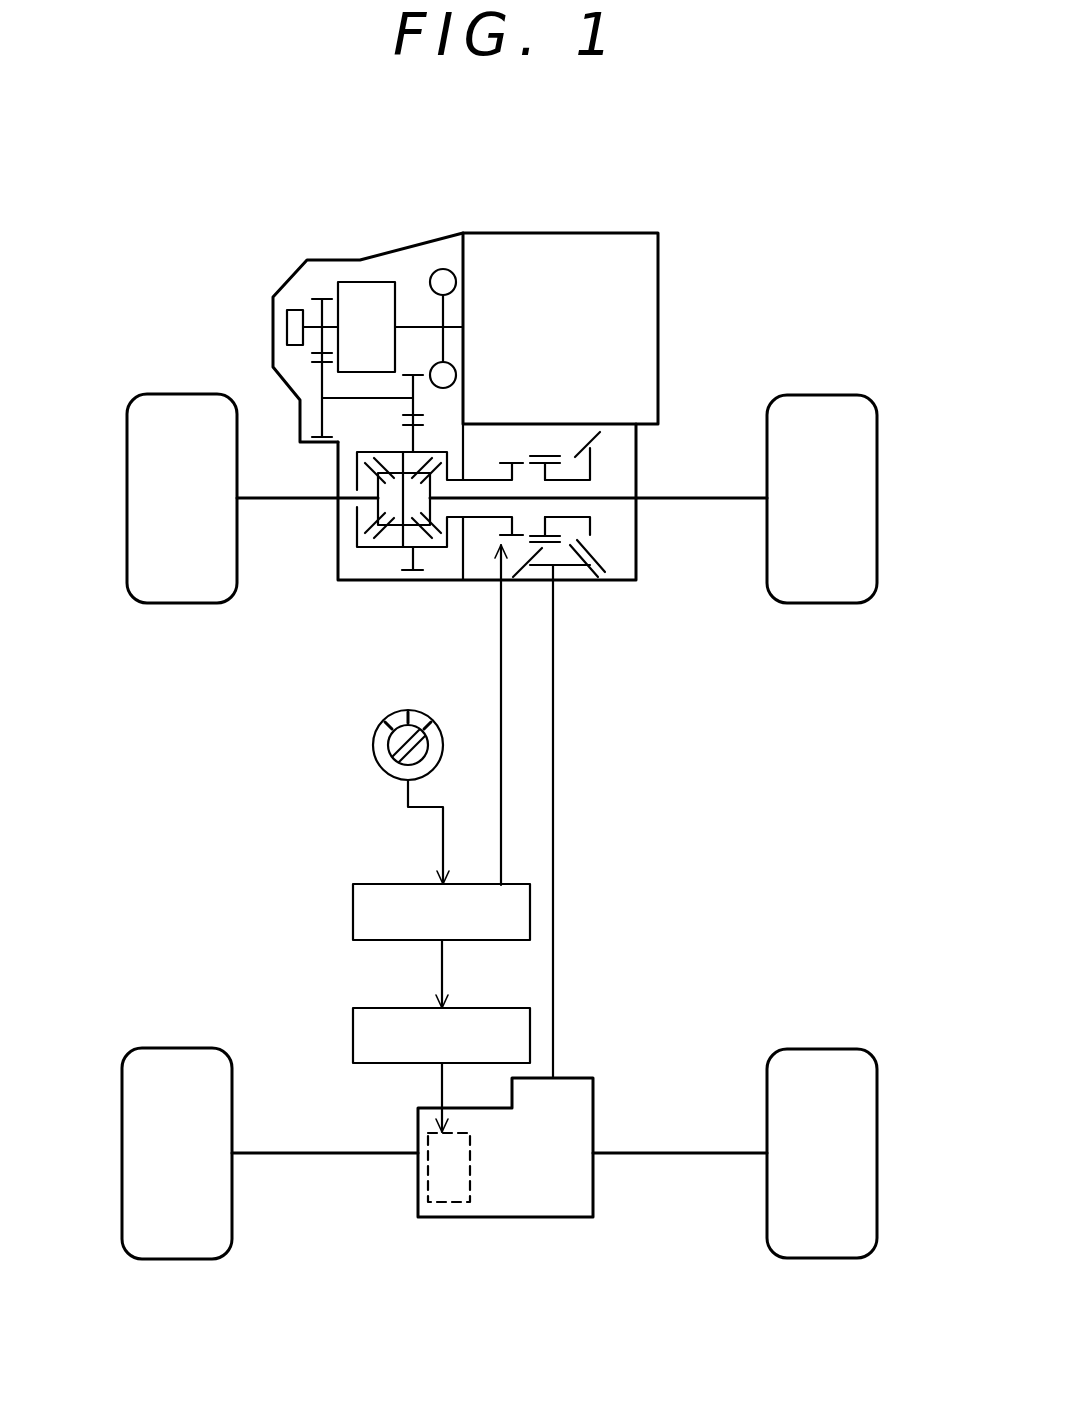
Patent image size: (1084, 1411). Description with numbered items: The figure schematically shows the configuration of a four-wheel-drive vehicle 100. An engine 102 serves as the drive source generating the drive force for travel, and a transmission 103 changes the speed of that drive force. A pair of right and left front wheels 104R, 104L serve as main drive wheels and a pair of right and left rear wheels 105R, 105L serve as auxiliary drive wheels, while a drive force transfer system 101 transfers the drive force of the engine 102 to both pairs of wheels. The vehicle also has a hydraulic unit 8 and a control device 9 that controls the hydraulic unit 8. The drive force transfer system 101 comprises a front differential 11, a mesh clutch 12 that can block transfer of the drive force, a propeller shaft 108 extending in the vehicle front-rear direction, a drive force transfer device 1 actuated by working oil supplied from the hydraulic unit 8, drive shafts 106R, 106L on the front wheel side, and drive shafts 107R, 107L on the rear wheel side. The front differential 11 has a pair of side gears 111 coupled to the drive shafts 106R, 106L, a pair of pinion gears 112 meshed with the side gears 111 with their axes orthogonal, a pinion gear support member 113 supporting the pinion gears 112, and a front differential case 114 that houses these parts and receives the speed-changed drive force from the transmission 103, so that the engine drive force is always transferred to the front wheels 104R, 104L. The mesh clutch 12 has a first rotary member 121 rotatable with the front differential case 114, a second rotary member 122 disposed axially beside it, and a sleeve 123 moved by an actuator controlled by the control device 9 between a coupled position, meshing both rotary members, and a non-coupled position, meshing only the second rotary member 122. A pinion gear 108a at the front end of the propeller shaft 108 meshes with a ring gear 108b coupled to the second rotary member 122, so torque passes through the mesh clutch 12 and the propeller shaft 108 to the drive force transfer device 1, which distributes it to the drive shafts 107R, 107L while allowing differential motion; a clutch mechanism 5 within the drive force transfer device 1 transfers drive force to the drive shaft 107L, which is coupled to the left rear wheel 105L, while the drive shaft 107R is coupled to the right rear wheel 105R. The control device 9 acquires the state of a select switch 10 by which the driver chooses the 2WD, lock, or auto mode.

The four-wheel-drive vehicle 100 is at (745, 203).
The drive force transfer system 101 is at (703, 375).
The engine 102 is at (532, 233).
The transmission 103 is at (348, 273).
The front differential 11 is at (440, 498).
The side gears 111 is at (382, 506).
The pinion gears 112 is at (408, 472).
The pinion gear support member 113 is at (400, 502).
The front differential case 114 is at (365, 550).
The mesh clutch 12 is at (594, 436).
The first rotary member 121 is at (512, 462).
The second rotary member 122 is at (577, 477).
The sleeve 123 is at (542, 457).
The propeller shaft 108 is at (555, 777).
The pinion gear 108a is at (590, 578).
The ring gear 108b is at (590, 536).
The select switch 10 is at (377, 765).
The control device 9 is at (393, 883).
The hydraulic unit 8 is at (352, 1023).
The drive force transfer device 1 is at (546, 1148).
The clutch mechanism 5 is at (443, 1203).
The left front wheel 104L is at (127, 498).
The right front wheel 104R is at (922, 462).
The left rear wheel 105L is at (120, 1152).
The right rear wheel 105R is at (877, 1152).
The drive shaft on the front wheel side 106L is at (307, 497).
The drive shaft on the front wheel side 106R is at (709, 497).
The drive shaft on the rear wheel side 107L is at (355, 1155).
The drive shaft on the rear wheel side 107R is at (653, 1153).